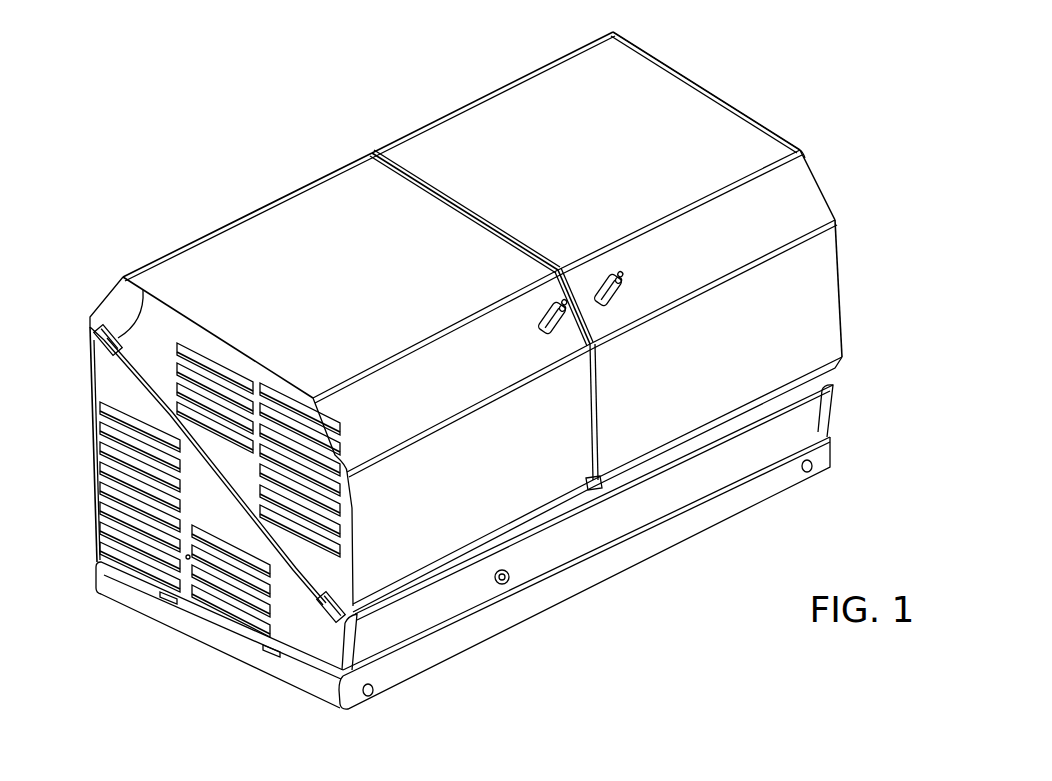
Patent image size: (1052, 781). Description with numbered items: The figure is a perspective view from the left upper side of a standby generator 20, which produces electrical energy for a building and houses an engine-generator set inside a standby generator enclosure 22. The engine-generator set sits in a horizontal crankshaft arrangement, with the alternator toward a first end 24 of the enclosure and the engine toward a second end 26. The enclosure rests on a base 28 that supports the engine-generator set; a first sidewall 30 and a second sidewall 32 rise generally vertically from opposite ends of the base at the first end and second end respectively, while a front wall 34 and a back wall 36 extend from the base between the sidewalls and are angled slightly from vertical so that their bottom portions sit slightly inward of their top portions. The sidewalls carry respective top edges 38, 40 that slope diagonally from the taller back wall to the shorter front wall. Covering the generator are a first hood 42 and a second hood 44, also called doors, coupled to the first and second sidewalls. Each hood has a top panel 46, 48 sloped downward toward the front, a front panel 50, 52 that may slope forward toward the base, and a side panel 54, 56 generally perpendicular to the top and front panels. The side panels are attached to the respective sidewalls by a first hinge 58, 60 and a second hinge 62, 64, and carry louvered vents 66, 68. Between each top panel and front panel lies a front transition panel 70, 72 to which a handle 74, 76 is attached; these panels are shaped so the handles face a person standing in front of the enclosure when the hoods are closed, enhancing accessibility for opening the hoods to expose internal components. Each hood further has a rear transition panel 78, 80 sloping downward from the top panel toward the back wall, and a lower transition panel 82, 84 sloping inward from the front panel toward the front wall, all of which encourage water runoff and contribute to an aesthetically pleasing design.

The standby generator 20 is at (830, 47).
The standby generator enclosure 22 is at (692, 67).
The first end 24 is at (842, 415).
The second end 26 is at (216, 672).
The base 28 is at (625, 565).
The first sidewall 30 is at (842, 380).
The second sidewall 32 is at (292, 637).
The front wall 34 is at (740, 455).
The back wall 36 is at (87, 395).
The top edge 38 is at (845, 222).
The top edge 40 is at (212, 330).
The first hood 42 is at (553, 174).
The second hood 44 is at (348, 279).
The top panel 46 is at (706, 102).
The top panel 48 is at (255, 226).
The front panel 50 is at (820, 307).
The front panel 52 is at (405, 553).
The side panel 54 is at (822, 161).
The side panel 56 is at (118, 300).
The first hinge 58 is at (655, 42).
The first hinge 60 is at (120, 337).
The second hinge 62 is at (855, 335).
The second hinge 64 is at (325, 628).
The vent 66 is at (806, 145).
The vent 68 is at (215, 375).
The front transition panel 70 is at (808, 204).
The front transition panel 72 is at (420, 398).
The handle 74 is at (615, 285).
The handle 76 is at (545, 318).
The rear transition panel 78 is at (422, 117).
The rear transition panel 80 is at (298, 182).
The lower transition panel 82 is at (655, 457).
The lower transition panel 84 is at (537, 517).